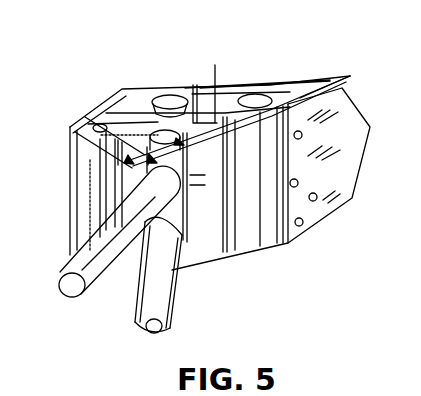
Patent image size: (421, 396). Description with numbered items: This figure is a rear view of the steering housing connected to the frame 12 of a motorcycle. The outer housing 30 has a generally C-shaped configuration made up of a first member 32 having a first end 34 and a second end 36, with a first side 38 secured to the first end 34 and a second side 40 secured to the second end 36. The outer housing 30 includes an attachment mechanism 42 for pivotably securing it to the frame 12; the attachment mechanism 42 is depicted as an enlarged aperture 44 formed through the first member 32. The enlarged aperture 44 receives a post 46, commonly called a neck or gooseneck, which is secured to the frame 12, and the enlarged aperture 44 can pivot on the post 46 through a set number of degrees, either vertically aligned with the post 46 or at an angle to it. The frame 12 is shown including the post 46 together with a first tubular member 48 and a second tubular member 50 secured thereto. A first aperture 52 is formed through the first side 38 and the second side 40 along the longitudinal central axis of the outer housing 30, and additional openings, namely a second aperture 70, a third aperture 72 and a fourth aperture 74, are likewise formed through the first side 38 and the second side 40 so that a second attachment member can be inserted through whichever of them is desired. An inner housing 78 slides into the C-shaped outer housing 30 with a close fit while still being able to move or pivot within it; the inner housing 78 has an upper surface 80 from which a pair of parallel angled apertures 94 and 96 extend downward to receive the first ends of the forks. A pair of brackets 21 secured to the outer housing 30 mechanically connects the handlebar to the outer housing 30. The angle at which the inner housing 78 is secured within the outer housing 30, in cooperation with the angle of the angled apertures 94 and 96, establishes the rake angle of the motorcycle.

The frame 12 is at (112, 302).
The brackets 21 is at (133, 90).
The outer housing 30 is at (329, 62).
The first member 32 is at (94, 131).
The first end 34 is at (351, 76).
The second end 36 is at (108, 136).
The first side 38 is at (353, 143).
The second side 40 is at (77, 120).
The attachment mechanism 42 is at (181, 95).
The enlarged aperture 44 is at (190, 156).
The post 46 is at (190, 183).
The first tubular member 48 is at (100, 276).
The second tubular member 50 is at (169, 300).
The first aperture 52 is at (304, 134).
The second aperture 70 is at (300, 182).
The third aperture 72 is at (319, 196).
The fourth aperture 74 is at (304, 224).
The inner housing 78 is at (199, 78).
The upper surface 80 is at (228, 87).
The angled aperture 94 is at (263, 94).
The angled aperture 96 is at (176, 104).